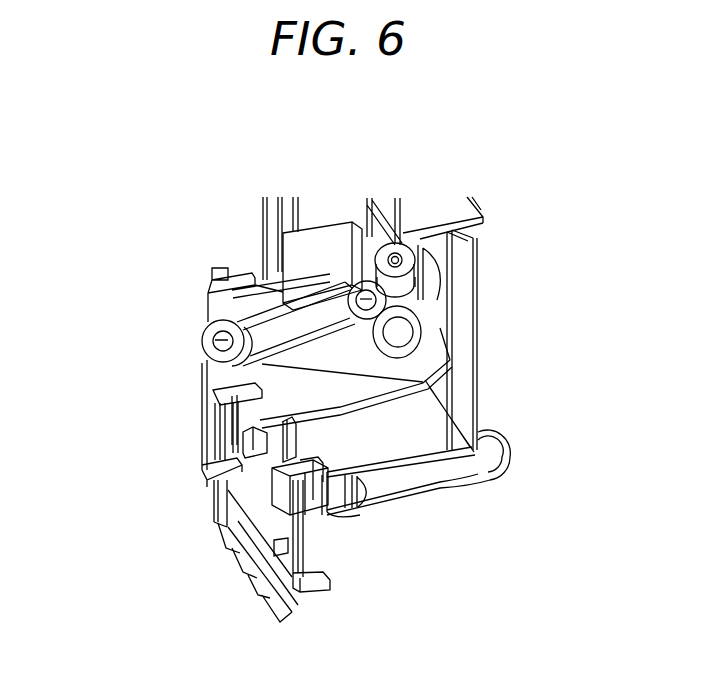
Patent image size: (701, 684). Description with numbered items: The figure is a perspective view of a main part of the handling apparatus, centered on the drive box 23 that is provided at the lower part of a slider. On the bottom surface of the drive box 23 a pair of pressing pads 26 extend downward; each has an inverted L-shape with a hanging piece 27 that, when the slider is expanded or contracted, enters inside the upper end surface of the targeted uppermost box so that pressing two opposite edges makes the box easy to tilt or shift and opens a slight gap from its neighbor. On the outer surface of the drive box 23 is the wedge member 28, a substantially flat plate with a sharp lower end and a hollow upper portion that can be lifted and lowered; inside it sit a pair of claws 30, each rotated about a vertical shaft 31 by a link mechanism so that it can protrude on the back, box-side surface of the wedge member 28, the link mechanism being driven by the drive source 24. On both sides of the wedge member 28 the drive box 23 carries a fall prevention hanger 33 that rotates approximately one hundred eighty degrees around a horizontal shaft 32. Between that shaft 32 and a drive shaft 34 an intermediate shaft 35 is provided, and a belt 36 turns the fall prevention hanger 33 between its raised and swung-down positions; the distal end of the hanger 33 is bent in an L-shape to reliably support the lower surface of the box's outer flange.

The drive box 23 is at (437, 340).
The drive source 24 is at (293, 256).
The pressing pads 26 is at (253, 429).
The hanging piece 27 is at (322, 442).
The wedge member 28 is at (252, 583).
The claws 30 is at (300, 500).
The vertical shaft 31 is at (306, 518).
The horizontal shaft 32 is at (203, 345).
The fall prevention hanger 33 is at (212, 377).
The drive shaft 34 is at (397, 252).
The intermediate shaft 35 is at (356, 292).
The belt 36 is at (445, 316).